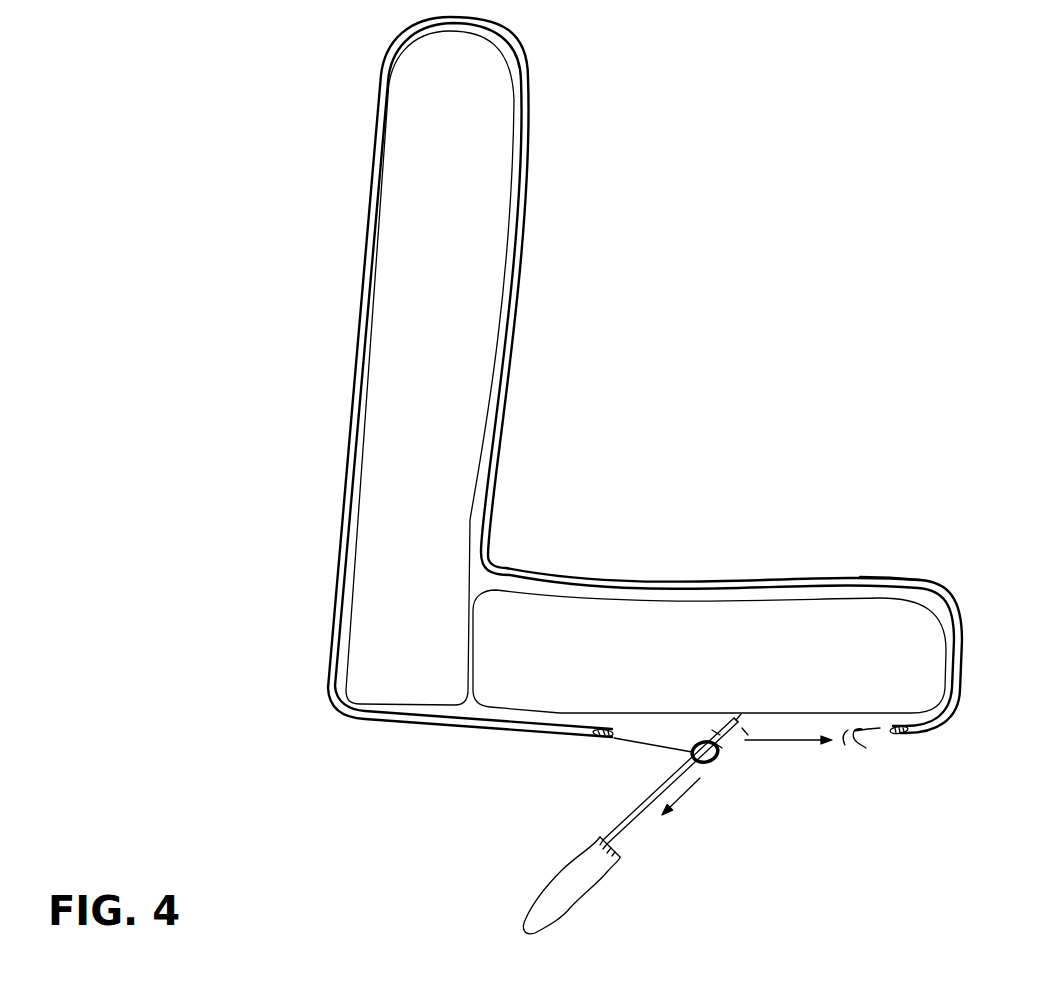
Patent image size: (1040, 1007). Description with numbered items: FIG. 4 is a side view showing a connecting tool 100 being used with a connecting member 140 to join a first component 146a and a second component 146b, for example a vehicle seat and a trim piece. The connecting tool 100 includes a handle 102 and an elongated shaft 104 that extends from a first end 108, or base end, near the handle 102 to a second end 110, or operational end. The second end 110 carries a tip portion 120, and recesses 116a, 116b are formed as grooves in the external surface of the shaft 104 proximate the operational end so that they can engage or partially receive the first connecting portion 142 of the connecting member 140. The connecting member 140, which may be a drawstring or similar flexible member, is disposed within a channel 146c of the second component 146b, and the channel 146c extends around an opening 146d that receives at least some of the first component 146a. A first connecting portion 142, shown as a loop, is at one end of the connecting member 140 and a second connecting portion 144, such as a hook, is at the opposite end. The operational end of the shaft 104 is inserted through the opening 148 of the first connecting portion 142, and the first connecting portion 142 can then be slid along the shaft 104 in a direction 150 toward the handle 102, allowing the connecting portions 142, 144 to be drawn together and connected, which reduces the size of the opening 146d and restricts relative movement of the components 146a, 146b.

The connecting tool 100 is at (595, 824).
The handle 102 is at (540, 893).
The shaft 104 is at (636, 793).
The first end 108 is at (598, 830).
The second end 110 is at (710, 716).
The recess 116a is at (717, 731).
The recess 116b is at (728, 742).
The tip portion 120 is at (756, 719).
The connecting member 140 is at (628, 743).
The first connecting portion 142 is at (719, 767).
The second connecting portion 144 is at (847, 745).
The first component 146a is at (805, 630).
The second component 146b is at (887, 578).
The channel 146c is at (882, 732).
The opening 146d is at (884, 767).
The opening 148 is at (728, 750).
The direction 150 is at (684, 795).